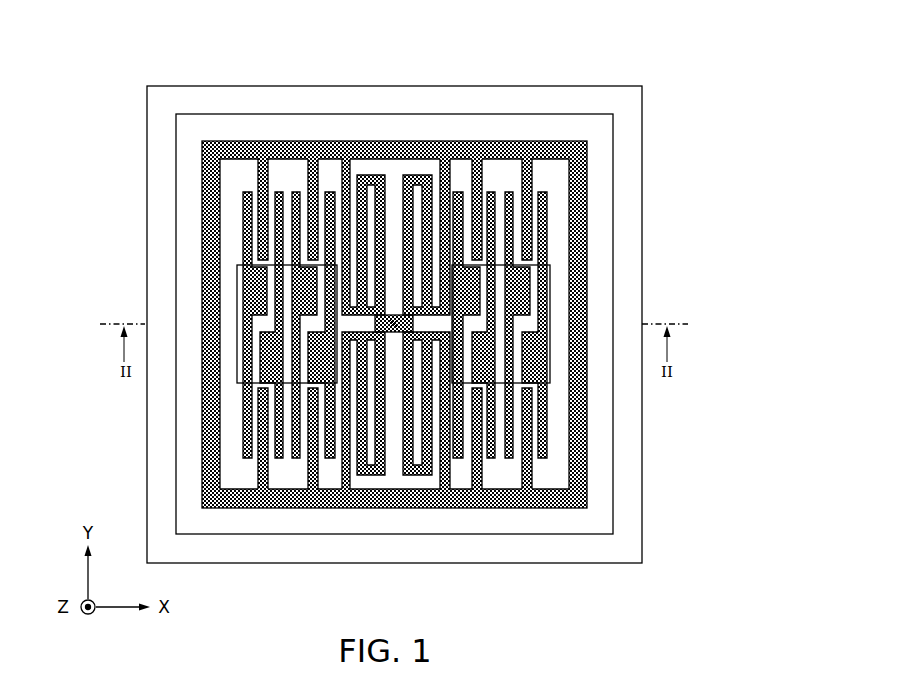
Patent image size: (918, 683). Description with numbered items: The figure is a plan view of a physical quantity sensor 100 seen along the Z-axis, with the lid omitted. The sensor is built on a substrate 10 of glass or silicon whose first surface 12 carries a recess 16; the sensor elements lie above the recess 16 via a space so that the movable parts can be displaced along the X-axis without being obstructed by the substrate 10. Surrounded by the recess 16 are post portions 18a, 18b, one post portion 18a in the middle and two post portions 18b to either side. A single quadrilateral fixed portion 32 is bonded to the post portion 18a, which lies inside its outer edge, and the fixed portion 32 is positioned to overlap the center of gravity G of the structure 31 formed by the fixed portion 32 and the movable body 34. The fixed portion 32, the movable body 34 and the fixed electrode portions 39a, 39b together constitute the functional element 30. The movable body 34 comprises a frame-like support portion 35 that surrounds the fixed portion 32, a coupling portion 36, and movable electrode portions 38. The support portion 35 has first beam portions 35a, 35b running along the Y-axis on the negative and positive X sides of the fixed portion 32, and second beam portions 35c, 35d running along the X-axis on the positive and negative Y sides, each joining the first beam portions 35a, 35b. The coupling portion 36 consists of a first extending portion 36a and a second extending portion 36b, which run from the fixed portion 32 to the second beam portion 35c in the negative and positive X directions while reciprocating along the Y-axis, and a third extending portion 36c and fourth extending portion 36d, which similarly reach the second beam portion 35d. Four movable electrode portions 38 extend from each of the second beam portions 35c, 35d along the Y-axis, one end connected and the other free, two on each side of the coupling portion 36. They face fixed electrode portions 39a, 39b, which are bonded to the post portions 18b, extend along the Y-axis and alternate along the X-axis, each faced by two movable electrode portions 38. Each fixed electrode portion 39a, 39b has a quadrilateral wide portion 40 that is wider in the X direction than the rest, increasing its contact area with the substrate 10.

The physical quantity sensor 100 is at (683, 73).
The substrate 10 is at (160, 442).
The first surface 12 is at (632, 479).
The recess 16 is at (578, 525).
The functional element 30 is at (193, 147).
The structure 31 is at (598, 172).
The movable body 34 is at (218, 133).
The support portion 35 is at (193, 188).
The first beam portion 35a is at (210, 250).
The first beam portion 35b is at (580, 277).
The second beam portion 35c is at (313, 150).
The second beam portion 35d is at (490, 500).
The coupling portion 36 is at (381, 325).
The first extending portion 36a is at (362, 175).
The second extending portion 36b is at (422, 175).
The third extending portion 36c is at (367, 473).
The fourth extending portion 36d is at (412, 473).
The movable electrode portion 38 is at (265, 172).
The fixed electrode portion 39a is at (247, 193).
The fixed electrode portion 39b is at (282, 193).
The wide portion 40 is at (255, 292).
The fixed portion 32 is at (395, 320).
The post portion 18a is at (414, 330).
The post portion 18b is at (263, 323).
The center of gravity G is at (395, 333).